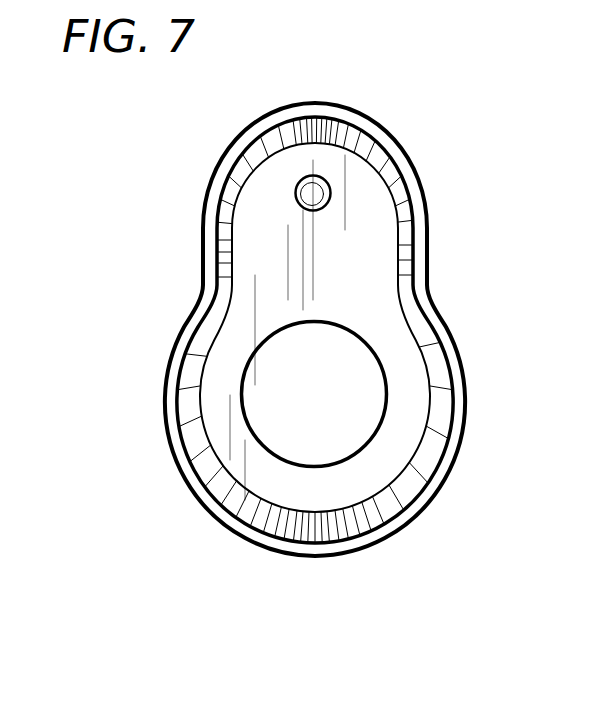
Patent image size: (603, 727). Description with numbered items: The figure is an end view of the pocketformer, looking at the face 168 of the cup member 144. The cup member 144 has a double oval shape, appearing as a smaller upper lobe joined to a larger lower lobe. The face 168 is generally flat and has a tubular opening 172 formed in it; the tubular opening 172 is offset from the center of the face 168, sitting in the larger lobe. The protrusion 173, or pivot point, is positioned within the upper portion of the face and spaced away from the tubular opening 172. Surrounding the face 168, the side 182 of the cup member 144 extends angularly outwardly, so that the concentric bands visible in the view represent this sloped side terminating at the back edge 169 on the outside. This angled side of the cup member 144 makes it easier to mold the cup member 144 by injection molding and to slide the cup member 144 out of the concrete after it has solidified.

The cup member 144 is at (432, 237).
The face 168 is at (405, 435).
The back edge 169 is at (422, 513).
The tubular opening 172 is at (372, 397).
The protrusion 173 is at (297, 177).
The side 182 is at (407, 147).